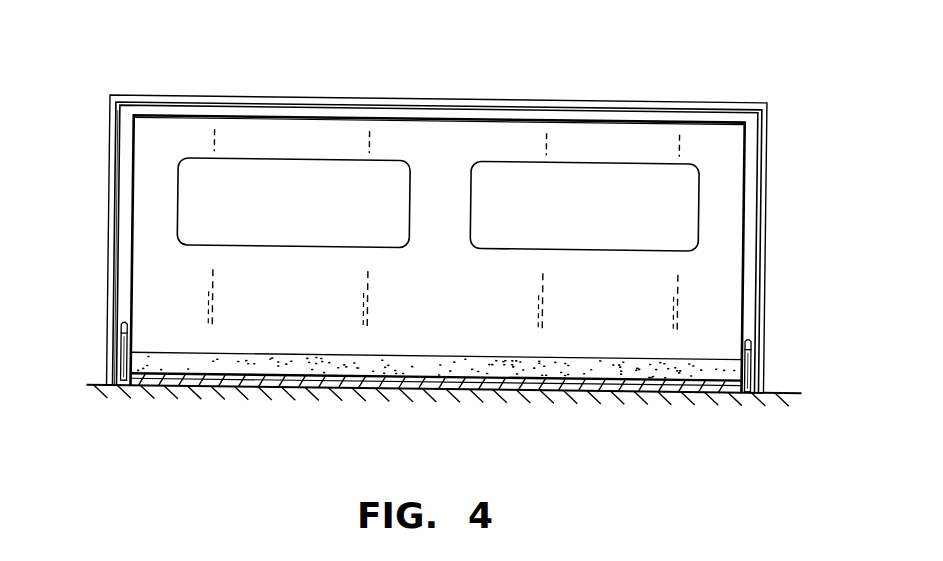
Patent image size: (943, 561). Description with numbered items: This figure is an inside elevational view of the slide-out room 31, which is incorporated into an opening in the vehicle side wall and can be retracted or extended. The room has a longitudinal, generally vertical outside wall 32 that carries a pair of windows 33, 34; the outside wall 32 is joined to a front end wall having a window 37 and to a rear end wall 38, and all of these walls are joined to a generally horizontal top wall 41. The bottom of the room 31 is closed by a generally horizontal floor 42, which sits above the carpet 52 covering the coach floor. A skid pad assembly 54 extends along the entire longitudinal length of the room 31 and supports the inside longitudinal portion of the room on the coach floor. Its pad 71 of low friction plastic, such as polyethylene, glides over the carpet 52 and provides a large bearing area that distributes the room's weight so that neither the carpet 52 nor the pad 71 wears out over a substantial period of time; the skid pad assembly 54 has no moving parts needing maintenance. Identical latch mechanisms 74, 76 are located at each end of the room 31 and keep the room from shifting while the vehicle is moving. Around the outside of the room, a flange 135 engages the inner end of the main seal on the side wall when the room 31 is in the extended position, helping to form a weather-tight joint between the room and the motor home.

The slide-out room 31 is at (717, 88).
The outside wall 32 is at (690, 283).
The window 33 is at (618, 182).
The window 34 is at (257, 180).
The window 37 is at (748, 168).
The rear end wall 38 is at (127, 186).
The top wall 41 is at (513, 121).
The floor 42 is at (477, 370).
The carpet 52 is at (707, 397).
The skid pad assembly 54 is at (217, 402).
The pad 71 is at (412, 388).
The latch mechanism 74 is at (123, 339).
The latch mechanism 76 is at (750, 350).
The flange 135 is at (775, 108).